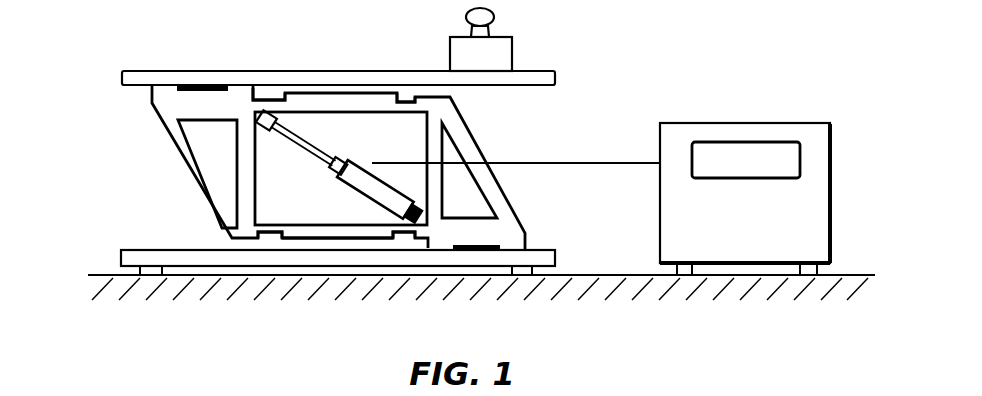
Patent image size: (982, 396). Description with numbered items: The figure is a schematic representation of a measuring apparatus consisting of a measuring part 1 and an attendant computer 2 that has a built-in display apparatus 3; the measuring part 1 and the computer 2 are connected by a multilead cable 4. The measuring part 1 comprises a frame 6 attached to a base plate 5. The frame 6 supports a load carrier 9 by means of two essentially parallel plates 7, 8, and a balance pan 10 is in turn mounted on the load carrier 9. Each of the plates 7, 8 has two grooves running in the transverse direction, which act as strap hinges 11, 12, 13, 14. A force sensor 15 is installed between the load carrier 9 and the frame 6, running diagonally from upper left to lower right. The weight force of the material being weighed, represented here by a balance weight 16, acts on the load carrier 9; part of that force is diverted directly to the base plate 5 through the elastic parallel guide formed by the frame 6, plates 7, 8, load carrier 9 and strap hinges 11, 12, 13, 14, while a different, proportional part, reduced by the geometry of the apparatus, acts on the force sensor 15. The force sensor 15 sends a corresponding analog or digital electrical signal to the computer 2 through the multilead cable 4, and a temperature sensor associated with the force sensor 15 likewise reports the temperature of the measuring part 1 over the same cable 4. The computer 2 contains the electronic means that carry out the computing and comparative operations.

The measuring part 1 is at (527, 133).
The computer 2 is at (804, 130).
The display apparatus 3 is at (800, 166).
The multilead cable 4 is at (574, 165).
The base plate 5 is at (226, 258).
The frame 6 is at (486, 233).
The plate 7 is at (347, 233).
The plate 8 is at (315, 105).
The load carrier 9 is at (174, 110).
The balance pan 10 is at (345, 100).
The strap hinge 11 is at (407, 233).
The strap hinge 12 is at (272, 235).
The strap hinge 13 is at (273, 103).
The strap hinge 14 is at (408, 100).
The force sensor 15 is at (355, 187).
The balance weight 16 is at (500, 50).